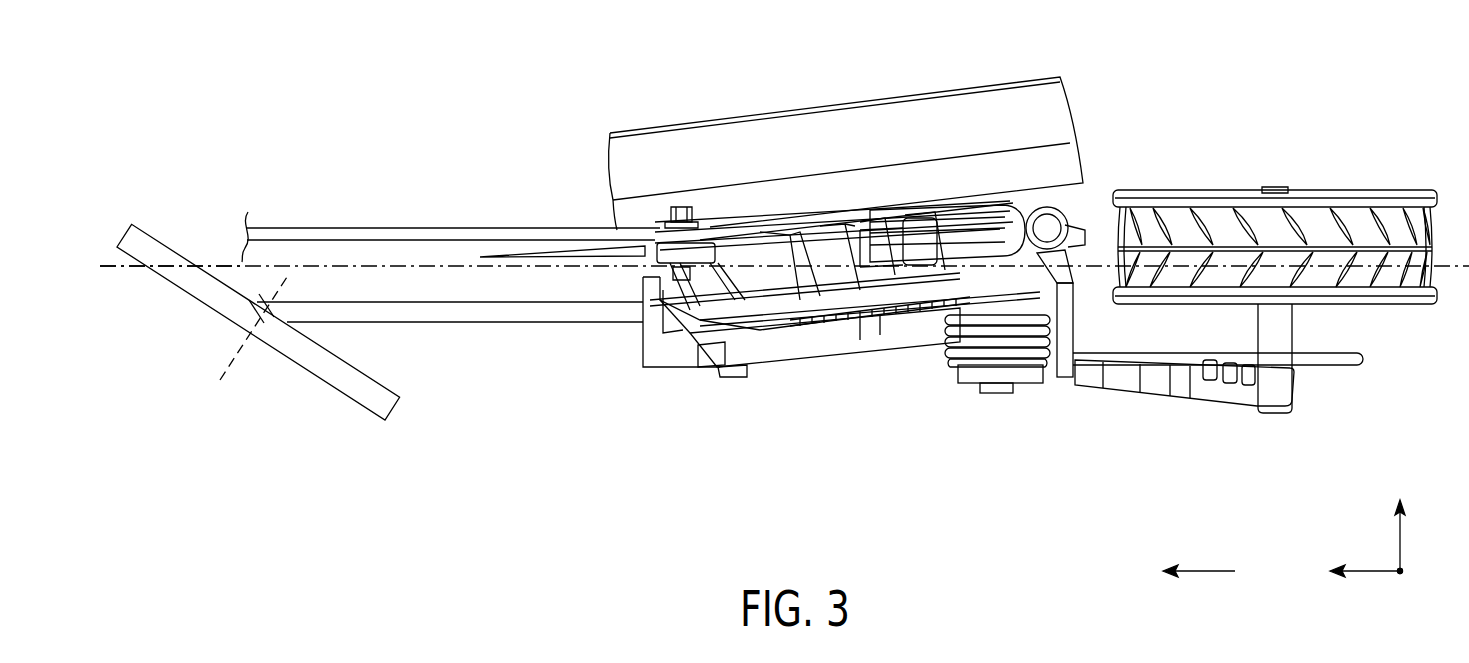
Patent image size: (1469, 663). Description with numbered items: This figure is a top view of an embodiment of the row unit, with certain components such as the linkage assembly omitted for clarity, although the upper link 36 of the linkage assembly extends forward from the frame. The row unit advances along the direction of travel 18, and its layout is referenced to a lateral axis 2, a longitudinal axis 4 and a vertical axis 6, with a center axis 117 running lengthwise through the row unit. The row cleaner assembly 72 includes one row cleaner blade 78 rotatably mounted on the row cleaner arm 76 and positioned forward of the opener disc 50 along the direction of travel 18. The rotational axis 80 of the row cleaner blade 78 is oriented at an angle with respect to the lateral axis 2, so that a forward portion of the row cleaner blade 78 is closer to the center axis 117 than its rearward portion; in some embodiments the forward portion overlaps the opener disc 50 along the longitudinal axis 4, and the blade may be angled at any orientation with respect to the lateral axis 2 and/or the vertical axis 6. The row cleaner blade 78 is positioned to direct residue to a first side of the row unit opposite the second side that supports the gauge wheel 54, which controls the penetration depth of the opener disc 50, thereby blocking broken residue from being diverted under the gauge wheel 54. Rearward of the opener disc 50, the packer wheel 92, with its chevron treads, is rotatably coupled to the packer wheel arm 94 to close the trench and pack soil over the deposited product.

The lateral axis 2 is at (1402, 543).
The longitudinal axis 4 is at (1370, 568).
The vertical axis 6 is at (1403, 575).
The direction of travel 18 is at (1208, 573).
The upper link 36 is at (427, 227).
The opener disc 50 is at (537, 250).
The gauge wheel 54 is at (963, 115).
The row cleaner assembly 72 is at (352, 450).
The row cleaner arm 76 is at (463, 322).
The row cleaner blade 78 is at (183, 287).
The rotational axis 80 is at (238, 357).
The packer wheel 92 is at (1338, 208).
The packer wheel arm 94 is at (1130, 385).
The center axis 117 is at (130, 267).